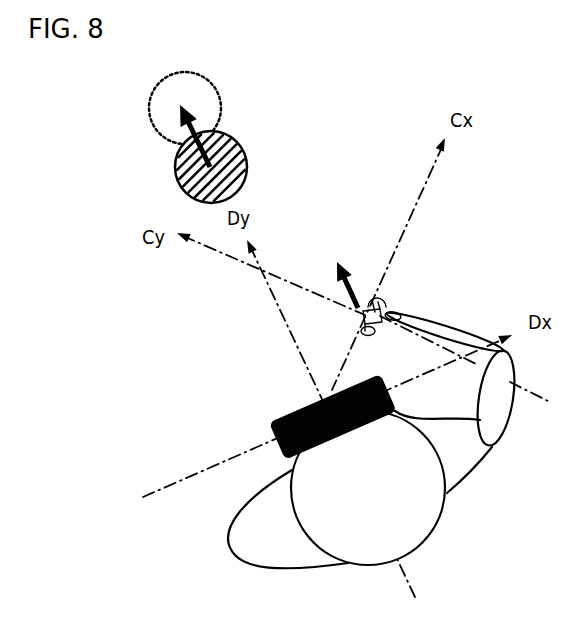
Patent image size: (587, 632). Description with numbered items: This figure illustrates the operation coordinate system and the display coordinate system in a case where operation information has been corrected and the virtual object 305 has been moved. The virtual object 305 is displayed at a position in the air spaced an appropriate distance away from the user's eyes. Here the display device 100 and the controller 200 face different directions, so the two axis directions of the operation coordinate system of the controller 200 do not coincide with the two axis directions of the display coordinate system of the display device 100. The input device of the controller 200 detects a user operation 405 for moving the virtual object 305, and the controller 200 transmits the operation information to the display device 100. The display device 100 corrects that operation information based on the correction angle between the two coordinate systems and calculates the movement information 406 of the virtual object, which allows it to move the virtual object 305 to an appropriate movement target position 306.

The display device 100 is at (267, 428).
The controller 200 is at (378, 312).
The virtual object 305 is at (182, 185).
The movement target position 306 is at (147, 116).
The user operation 405 is at (353, 280).
The movement information 406 is at (193, 125).